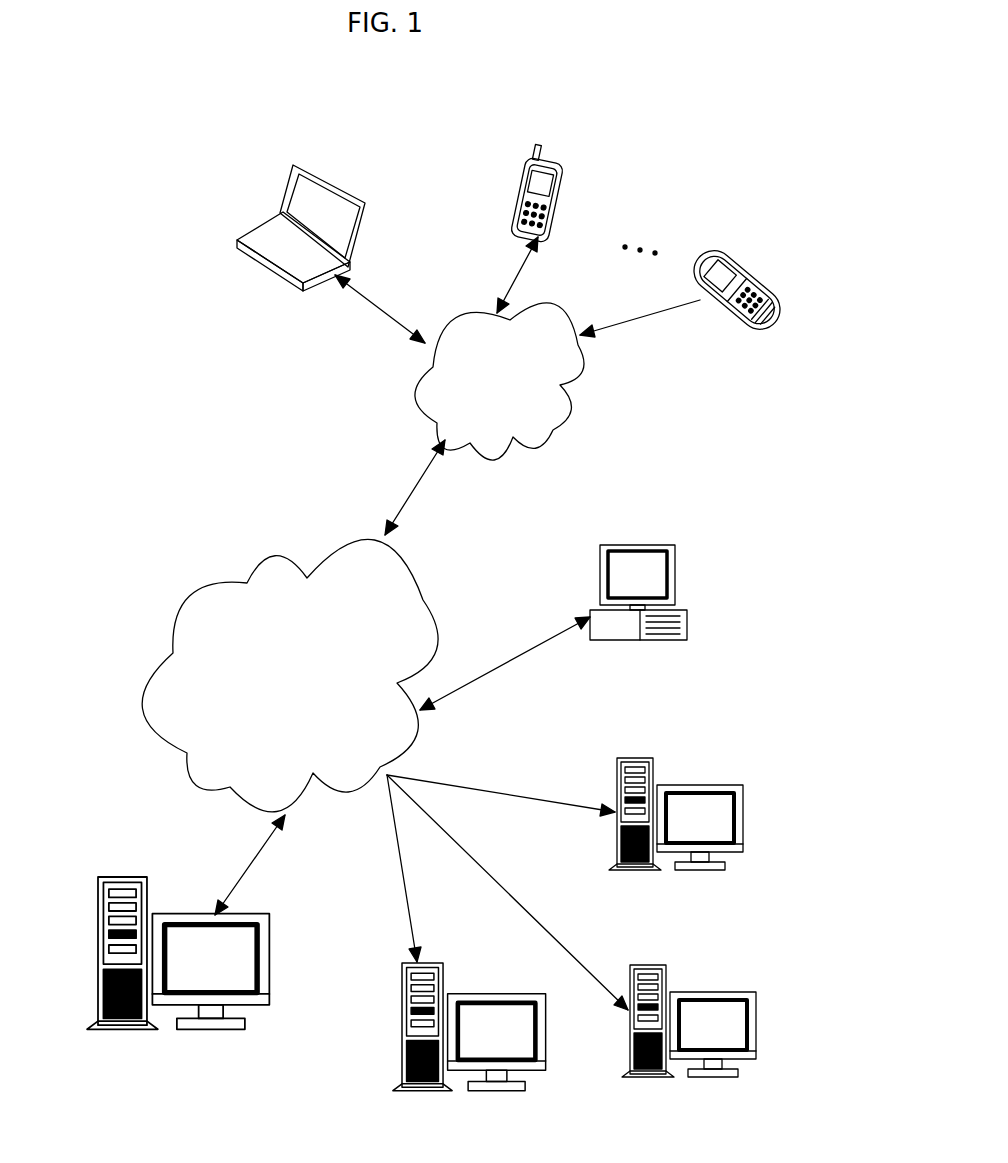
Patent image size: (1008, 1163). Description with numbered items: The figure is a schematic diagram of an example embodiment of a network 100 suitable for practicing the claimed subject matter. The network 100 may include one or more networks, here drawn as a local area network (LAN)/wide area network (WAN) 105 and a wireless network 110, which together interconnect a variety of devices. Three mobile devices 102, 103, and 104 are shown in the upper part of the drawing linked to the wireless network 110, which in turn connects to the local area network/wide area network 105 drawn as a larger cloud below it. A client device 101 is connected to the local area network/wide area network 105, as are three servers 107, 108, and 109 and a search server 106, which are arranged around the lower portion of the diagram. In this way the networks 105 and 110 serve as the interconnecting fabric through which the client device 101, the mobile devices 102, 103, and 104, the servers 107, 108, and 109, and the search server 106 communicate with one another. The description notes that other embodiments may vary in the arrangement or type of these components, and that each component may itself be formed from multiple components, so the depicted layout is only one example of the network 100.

The network 100 is at (612, 115).
The client device 101 is at (688, 622).
The mobile device 102 is at (362, 233).
The mobile device 103 is at (557, 190).
The mobile device 104 is at (778, 268).
The local area network (LAN)/wide area network (WAN) 105 is at (425, 597).
The search server 106 is at (273, 957).
The server 107 is at (548, 1030).
The server 108 is at (757, 1026).
The server 109 is at (745, 818).
The wireless network 110 is at (573, 413).